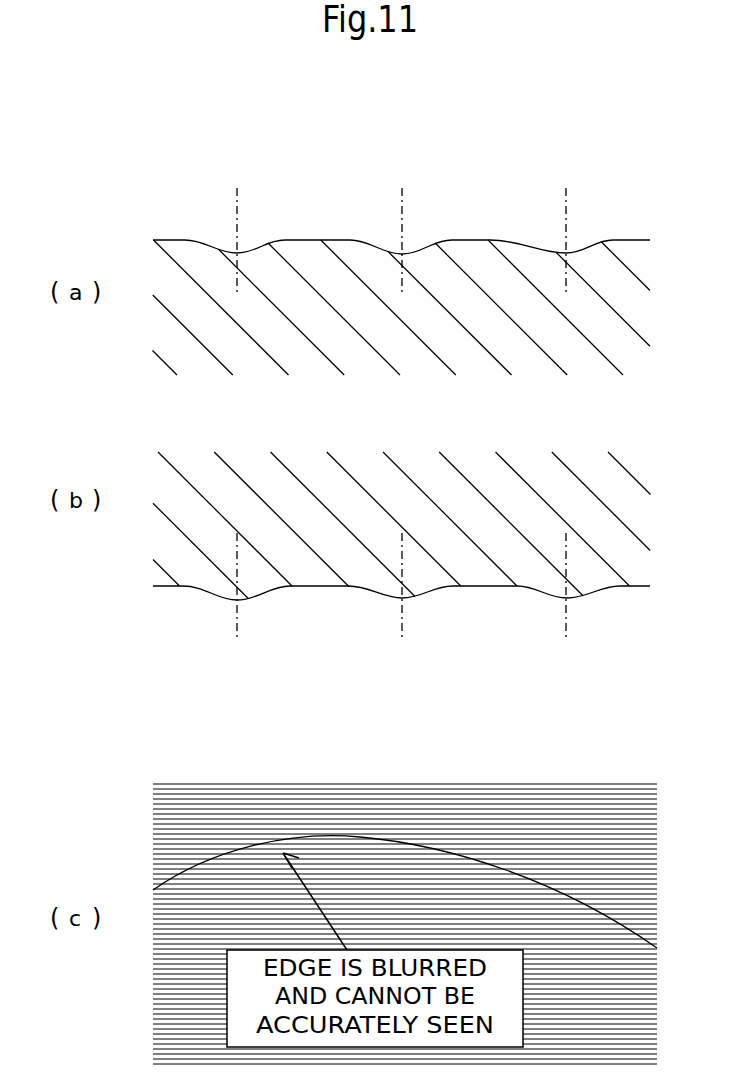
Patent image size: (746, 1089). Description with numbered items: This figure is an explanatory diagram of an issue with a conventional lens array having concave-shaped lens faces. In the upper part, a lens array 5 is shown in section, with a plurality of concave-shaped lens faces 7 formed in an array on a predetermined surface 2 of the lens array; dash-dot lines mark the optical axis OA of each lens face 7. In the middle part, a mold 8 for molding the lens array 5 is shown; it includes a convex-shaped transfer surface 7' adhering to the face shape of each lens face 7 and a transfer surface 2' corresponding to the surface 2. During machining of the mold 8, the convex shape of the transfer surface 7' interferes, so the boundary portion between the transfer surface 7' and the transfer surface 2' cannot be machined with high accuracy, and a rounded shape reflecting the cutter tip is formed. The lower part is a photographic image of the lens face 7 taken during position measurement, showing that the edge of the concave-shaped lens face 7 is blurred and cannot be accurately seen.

The lens face 7 is at (405, 566).
The optical axis OA is at (237, 210).
The surface 2 is at (368, 201).
The lens array 5 is at (480, 238).
The transfer surface 7' is at (221, 649).
The transfer surface 2' is at (371, 642).
The mold 8 is at (483, 587).